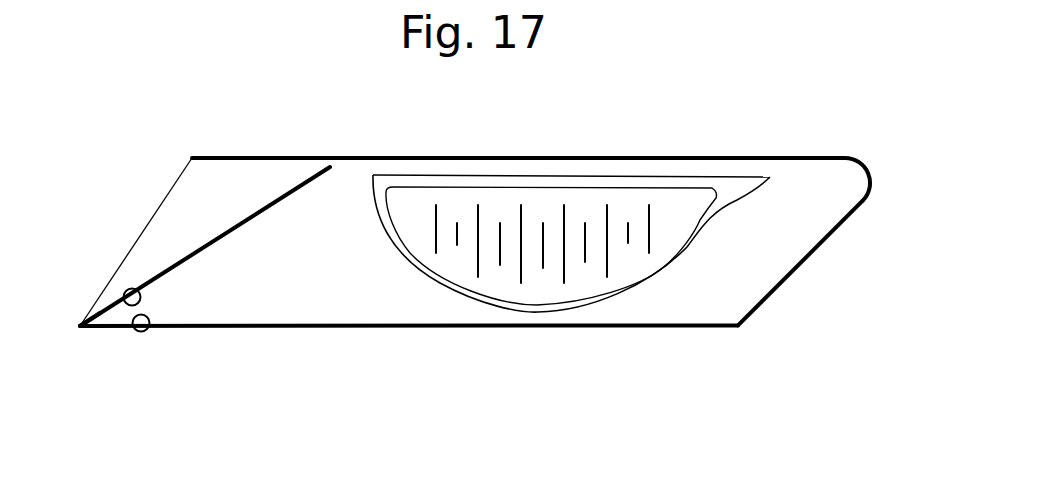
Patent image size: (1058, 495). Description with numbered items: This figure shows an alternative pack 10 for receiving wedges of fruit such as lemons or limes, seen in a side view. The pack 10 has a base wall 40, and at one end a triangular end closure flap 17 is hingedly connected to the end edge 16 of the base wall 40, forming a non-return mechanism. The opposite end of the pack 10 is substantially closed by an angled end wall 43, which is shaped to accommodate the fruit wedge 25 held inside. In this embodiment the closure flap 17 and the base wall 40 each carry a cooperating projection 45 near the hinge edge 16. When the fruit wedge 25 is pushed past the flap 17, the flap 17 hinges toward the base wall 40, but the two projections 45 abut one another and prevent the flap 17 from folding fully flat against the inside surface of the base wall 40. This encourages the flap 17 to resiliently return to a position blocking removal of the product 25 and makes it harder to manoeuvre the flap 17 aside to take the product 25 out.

The pack 10 is at (842, 140).
The end edge 16 is at (76, 332).
The end closure flap 17 is at (207, 245).
The fruit wedge 25 is at (633, 200).
The base wall 40 is at (400, 329).
The angled end wall 43 is at (815, 253).
The projections 45 is at (127, 290).